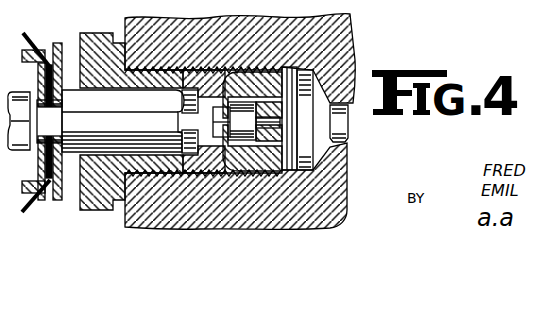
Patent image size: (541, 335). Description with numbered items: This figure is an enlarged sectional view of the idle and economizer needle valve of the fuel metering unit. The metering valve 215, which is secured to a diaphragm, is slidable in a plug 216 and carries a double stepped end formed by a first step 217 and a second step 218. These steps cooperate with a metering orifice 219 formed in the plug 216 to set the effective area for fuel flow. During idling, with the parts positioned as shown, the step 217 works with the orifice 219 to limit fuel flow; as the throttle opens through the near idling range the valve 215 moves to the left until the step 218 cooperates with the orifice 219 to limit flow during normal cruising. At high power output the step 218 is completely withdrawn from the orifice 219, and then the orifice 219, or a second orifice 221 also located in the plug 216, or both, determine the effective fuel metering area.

The metering valve 215 is at (77, 97).
The plug 216 is at (185, 70).
The step 217 is at (203, 135).
The step 218 is at (235, 93).
The metering orifice 219 is at (350, 37).
The second orifice 221 is at (282, 158).